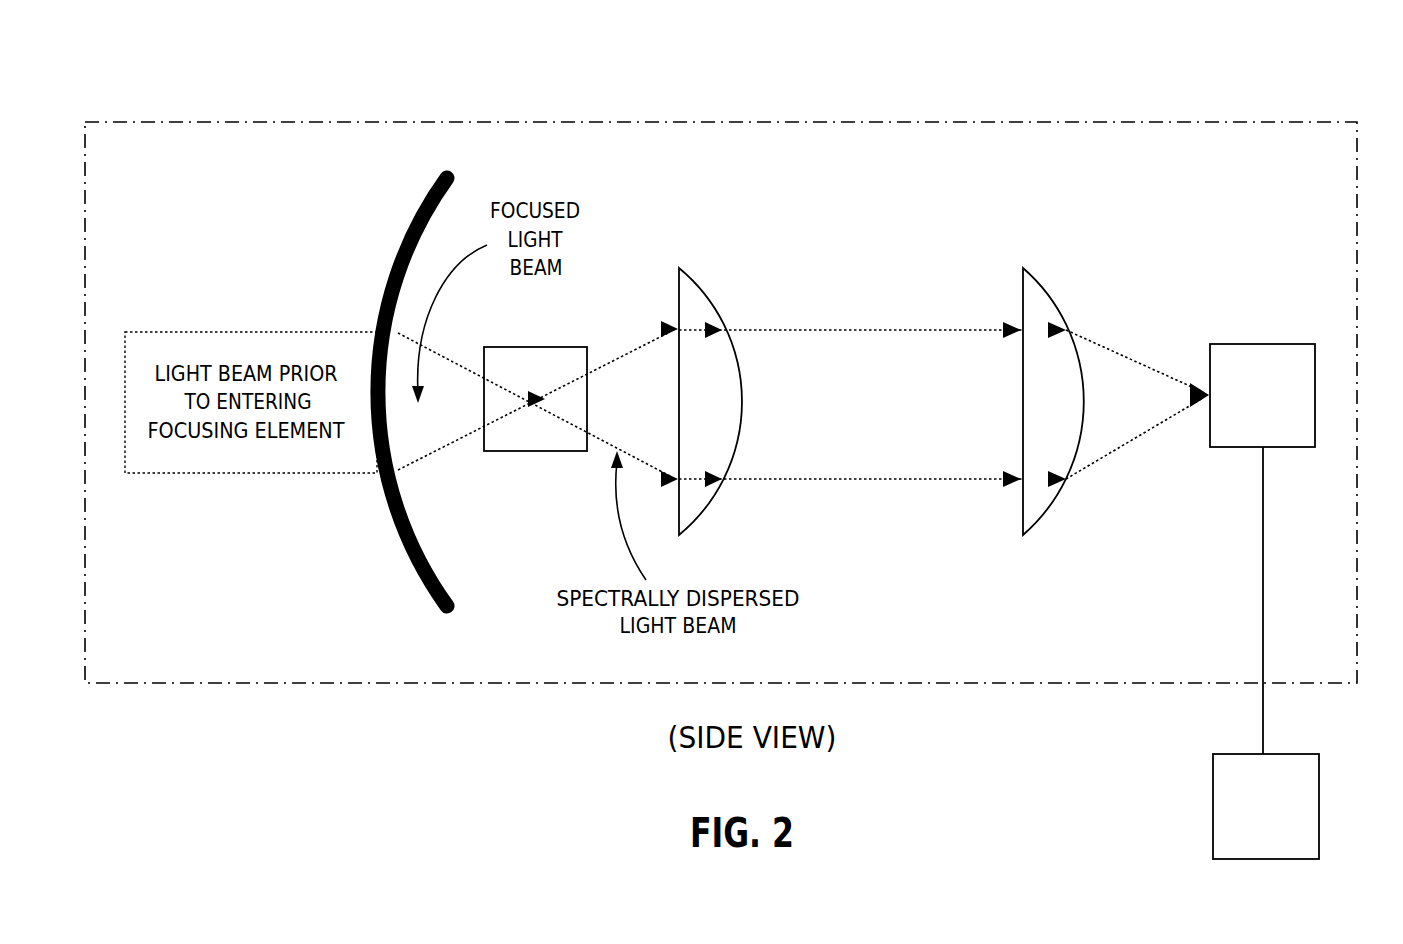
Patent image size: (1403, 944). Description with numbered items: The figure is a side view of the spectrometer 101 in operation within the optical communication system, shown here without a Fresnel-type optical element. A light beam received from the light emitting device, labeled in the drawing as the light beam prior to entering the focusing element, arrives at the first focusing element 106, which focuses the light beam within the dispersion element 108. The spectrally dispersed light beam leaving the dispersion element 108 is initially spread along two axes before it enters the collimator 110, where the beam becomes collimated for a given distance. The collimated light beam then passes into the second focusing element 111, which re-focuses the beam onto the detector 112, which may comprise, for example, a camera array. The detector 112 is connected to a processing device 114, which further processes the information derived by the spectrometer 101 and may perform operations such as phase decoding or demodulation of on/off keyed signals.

The spectrometer 101 is at (1134, 78).
The first focusing element 106 is at (432, 186).
The dispersion element 108 is at (531, 345).
The collimator 110 is at (677, 300).
The second focusing element 111 is at (1021, 300).
The detector 112 is at (1245, 406).
The processing device 114 is at (1249, 818).